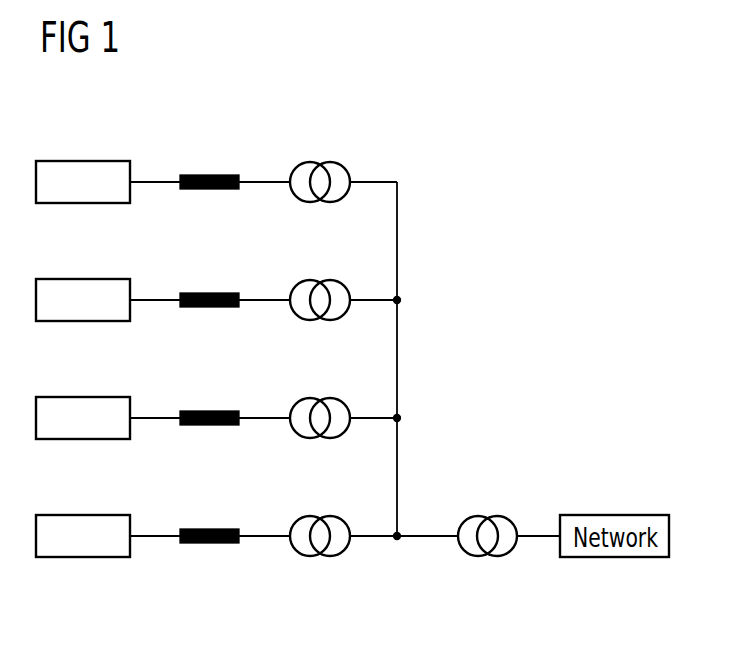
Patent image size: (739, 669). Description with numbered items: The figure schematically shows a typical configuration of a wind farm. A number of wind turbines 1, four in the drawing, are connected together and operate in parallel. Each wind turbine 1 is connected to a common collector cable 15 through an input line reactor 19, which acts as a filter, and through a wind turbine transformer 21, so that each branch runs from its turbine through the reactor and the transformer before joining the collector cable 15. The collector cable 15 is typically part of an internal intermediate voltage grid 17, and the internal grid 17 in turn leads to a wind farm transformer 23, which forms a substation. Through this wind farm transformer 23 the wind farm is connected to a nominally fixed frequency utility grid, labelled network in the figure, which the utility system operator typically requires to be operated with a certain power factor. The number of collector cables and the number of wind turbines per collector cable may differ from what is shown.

The wind turbine 1 is at (82, 161).
The input line reactor 19 is at (205, 175).
The wind turbine transformer 21 is at (324, 162).
The collector cable 15 is at (397, 258).
The internal intermediate voltage grid 17 is at (432, 533).
The wind farm transformer 23 is at (497, 516).